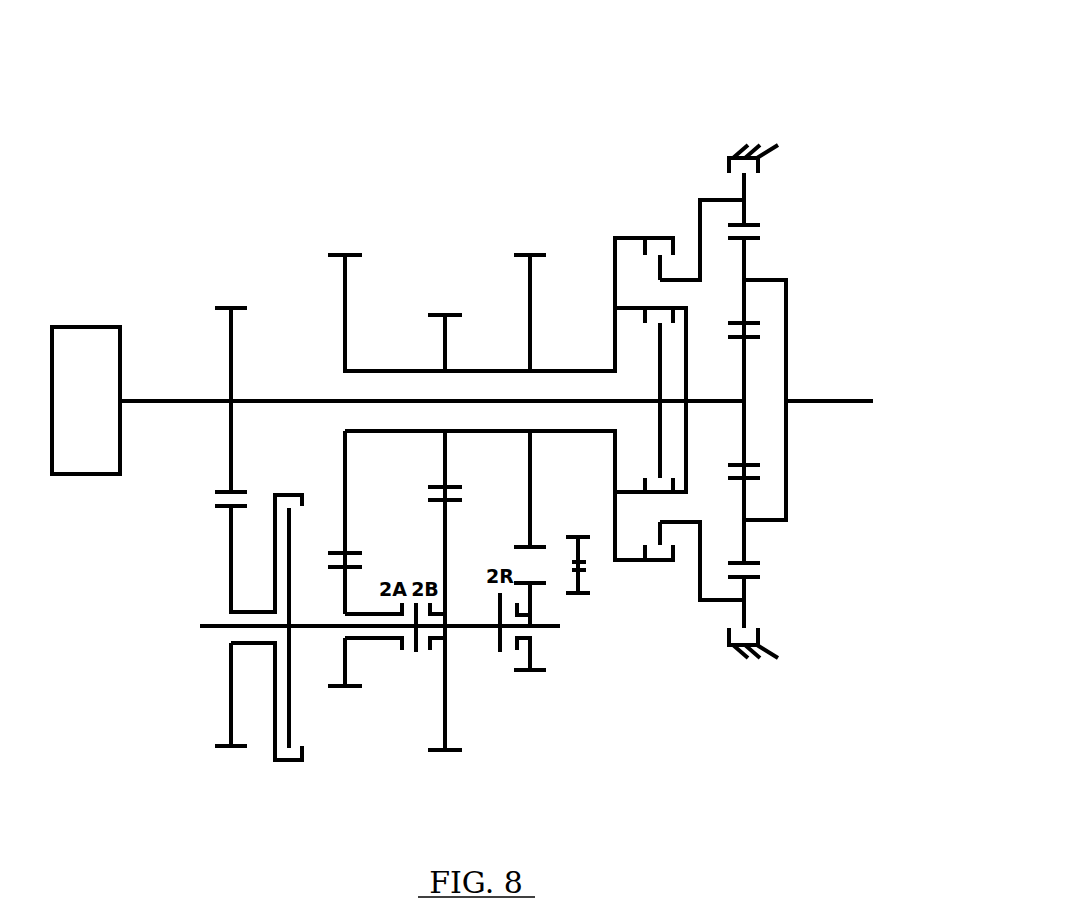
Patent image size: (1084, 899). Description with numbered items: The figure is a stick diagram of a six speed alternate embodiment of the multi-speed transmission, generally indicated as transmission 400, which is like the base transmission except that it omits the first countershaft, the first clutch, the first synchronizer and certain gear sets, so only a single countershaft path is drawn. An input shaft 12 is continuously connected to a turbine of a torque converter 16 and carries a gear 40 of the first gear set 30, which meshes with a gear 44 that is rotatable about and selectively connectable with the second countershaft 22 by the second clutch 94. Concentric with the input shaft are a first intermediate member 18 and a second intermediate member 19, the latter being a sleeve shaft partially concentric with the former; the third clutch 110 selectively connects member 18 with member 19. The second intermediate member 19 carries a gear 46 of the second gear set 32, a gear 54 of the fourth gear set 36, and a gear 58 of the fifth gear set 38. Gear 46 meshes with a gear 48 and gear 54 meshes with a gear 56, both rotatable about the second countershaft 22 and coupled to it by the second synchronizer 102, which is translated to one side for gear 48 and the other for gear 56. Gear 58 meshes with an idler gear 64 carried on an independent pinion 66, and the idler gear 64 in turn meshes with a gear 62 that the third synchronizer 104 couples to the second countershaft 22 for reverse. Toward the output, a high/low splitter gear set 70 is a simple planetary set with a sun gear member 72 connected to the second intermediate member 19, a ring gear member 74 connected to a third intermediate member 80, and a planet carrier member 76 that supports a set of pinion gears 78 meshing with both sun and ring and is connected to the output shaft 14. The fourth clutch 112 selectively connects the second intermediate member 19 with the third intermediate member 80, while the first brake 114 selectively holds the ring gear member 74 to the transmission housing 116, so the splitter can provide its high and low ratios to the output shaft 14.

The input shaft 12 is at (172, 400).
The output shaft 14 is at (826, 403).
The torque converter 16 is at (68, 414).
The first intermediate member 18 is at (252, 400).
The second intermediate member 19 is at (373, 370).
The second countershaft 22 is at (210, 630).
The first gear set 30 is at (163, 527).
The second gear set 32 is at (341, 537).
The fourth gear set 36 is at (420, 484).
The fifth gear set 38 is at (566, 672).
The gear 40 is at (230, 332).
The gear 44 is at (231, 566).
The gear 46 is at (348, 525).
The gear 48 is at (343, 600).
The gear 54 is at (450, 470).
The gear 56 is at (445, 577).
The gear 58 is at (527, 475).
The gear 62 is at (530, 600).
The idler gear 64 is at (576, 545).
The pinion 66 is at (585, 590).
The high/low splitter gear set 70 is at (805, 203).
The sun gear member 72 is at (748, 372).
The ring gear member 74 is at (748, 210).
The planet carrier member 76 is at (790, 312).
The pinion gears 78 is at (748, 262).
The third intermediate member 80 is at (700, 210).
The second clutch 94 is at (290, 762).
The second synchronizer 102 is at (416, 640).
The third synchronizer 104 is at (500, 655).
The third clutch 110 is at (677, 320).
The fourth clutch 112 is at (640, 250).
The first brake 114 is at (729, 163).
The transmission housing 116 is at (741, 152).
The transmission 400 is at (683, 70).